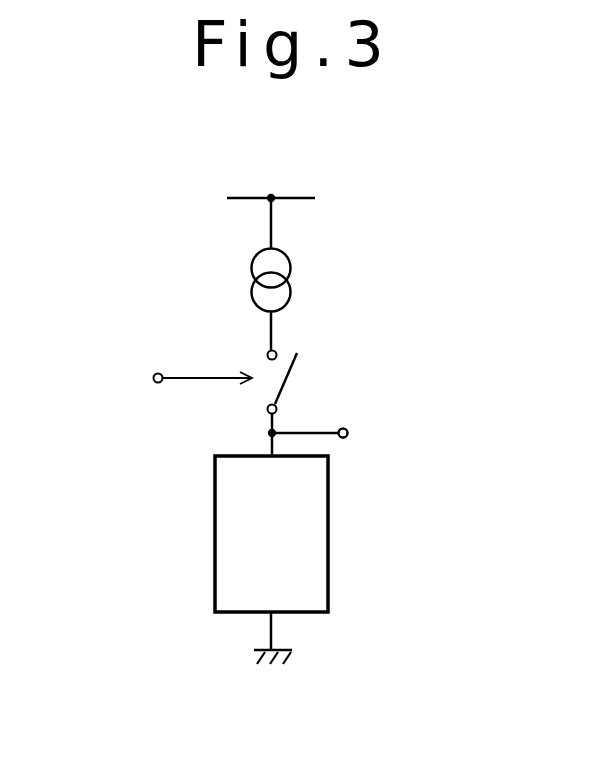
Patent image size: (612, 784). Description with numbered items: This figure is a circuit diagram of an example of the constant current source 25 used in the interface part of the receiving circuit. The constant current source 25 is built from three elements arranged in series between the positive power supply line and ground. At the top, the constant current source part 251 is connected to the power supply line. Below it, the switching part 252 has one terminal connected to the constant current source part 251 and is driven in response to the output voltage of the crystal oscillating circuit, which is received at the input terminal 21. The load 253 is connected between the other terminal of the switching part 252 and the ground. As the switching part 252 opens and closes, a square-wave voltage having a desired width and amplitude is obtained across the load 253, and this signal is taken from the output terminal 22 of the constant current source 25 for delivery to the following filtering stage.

The constant current source 25 is at (292, 160).
The constant current source part 251 is at (292, 287).
The switching part 252 is at (290, 376).
The load 253 is at (329, 536).
The input terminal 21 is at (153, 376).
The output terminal 22 is at (349, 433).